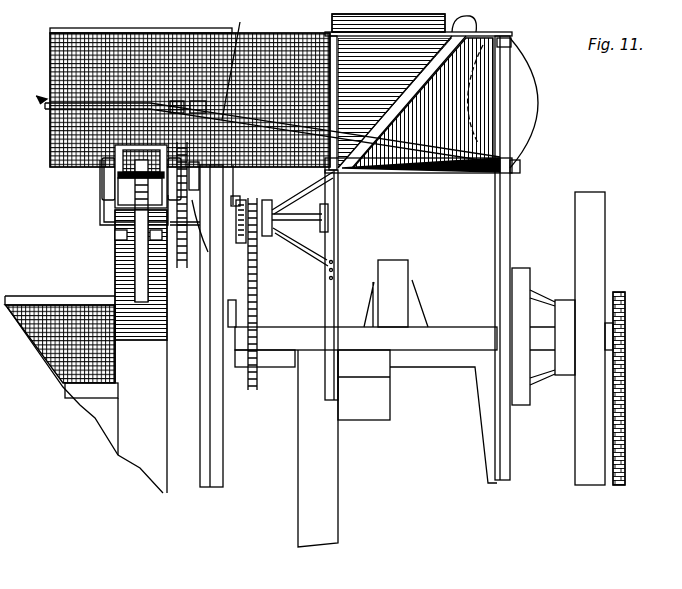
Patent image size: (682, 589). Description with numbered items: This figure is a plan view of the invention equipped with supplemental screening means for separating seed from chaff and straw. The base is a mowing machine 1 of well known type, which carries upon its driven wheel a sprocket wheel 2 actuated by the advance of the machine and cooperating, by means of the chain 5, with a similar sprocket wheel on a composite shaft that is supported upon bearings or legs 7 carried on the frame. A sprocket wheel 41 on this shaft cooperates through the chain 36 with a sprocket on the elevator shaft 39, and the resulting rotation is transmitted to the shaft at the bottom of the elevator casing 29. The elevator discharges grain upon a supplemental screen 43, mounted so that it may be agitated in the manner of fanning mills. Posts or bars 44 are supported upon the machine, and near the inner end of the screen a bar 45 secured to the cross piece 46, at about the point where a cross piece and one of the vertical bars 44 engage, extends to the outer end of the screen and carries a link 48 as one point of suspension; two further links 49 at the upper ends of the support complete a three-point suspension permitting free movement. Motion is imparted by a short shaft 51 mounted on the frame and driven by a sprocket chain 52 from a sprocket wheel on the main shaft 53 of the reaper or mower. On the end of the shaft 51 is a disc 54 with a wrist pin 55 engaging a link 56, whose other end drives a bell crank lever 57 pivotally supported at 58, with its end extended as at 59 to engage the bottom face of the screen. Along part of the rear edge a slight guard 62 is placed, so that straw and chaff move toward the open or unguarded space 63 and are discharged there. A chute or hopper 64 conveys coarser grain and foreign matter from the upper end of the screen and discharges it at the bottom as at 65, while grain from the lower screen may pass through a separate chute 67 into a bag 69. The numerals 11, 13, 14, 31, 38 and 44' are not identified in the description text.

The mowing machine 1 is at (436, 304).
The sprocket wheel 2 is at (618, 300).
The chain 5 is at (625, 412).
The bearings or legs 7 is at (45, 106).
The plate 11 is at (64, 387).
The bar 13 is at (78, 418).
The ground platform 14 is at (35, 305).
The elevator casing 29 is at (160, 335).
The gear housing 31 is at (118, 184).
The chain 36 is at (184, 268).
The bearing block 38 is at (199, 180).
The elevator shaft 39 is at (100, 180).
The sprocket wheel 41 is at (198, 232).
The supplemental screen 43 is at (50, 55).
The posts or bars 44 is at (518, 246).
The hopper cross bar 44' is at (419, 106).
The bar 45 is at (450, 114).
The cross piece 46 is at (420, 250).
The link 48 is at (28, 92).
The links 49 is at (326, 166).
The short shaft 51 is at (298, 218).
The sprocket chain 52 is at (258, 278).
The main shaft 53 is at (416, 340).
The disc 54 is at (218, 258).
The wrist pin 55 is at (208, 226).
The link 56 is at (234, 186).
The bell crank lever 57 is at (236, 62).
The pivot 58 is at (201, 101).
The extended end of bell crank lever 59 is at (180, 101).
The guard 62 is at (130, 30).
The open or unguarded space 63 is at (298, 40).
The chute or hopper 64 is at (418, 101).
The discharge point of hopper 65 is at (460, 24).
The separate chute 67 is at (480, 118).
The bag 69 is at (538, 92).